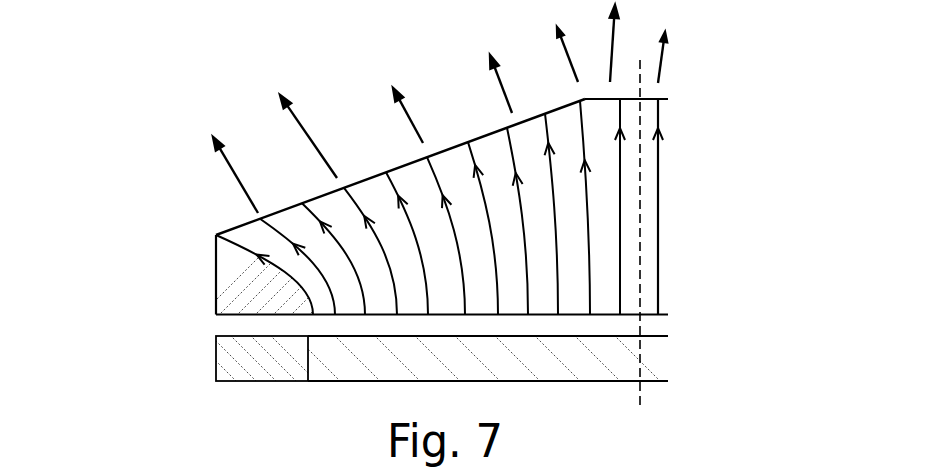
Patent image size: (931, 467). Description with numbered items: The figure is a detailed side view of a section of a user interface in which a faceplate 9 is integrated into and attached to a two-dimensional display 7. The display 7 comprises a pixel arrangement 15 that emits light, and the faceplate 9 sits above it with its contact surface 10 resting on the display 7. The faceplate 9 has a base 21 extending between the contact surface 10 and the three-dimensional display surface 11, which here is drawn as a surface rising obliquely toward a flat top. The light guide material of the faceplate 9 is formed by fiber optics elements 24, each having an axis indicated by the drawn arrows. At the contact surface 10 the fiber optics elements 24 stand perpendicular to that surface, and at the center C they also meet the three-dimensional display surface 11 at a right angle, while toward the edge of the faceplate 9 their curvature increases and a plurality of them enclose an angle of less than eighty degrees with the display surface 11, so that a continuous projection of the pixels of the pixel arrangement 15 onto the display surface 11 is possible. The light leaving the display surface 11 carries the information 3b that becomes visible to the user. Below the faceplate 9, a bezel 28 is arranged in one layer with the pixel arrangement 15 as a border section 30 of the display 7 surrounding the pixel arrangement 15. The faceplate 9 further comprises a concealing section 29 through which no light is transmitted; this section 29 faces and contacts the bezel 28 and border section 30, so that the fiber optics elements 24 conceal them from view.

The information 3b is at (290, 116).
The faceplate 9 is at (412, 88).
The three-dimensional display surface 11 is at (487, 132).
The fiber optics elements 24 is at (550, 137).
The concealing section 29 is at (230, 285).
The base 21 is at (662, 275).
The contact surface 10 is at (663, 313).
The pixel arrangement 15 is at (655, 352).
The bezel 28 is at (228, 347).
The border section 30 is at (243, 358).
The two-dimensional display 7 is at (190, 362).
The center C is at (641, 220).